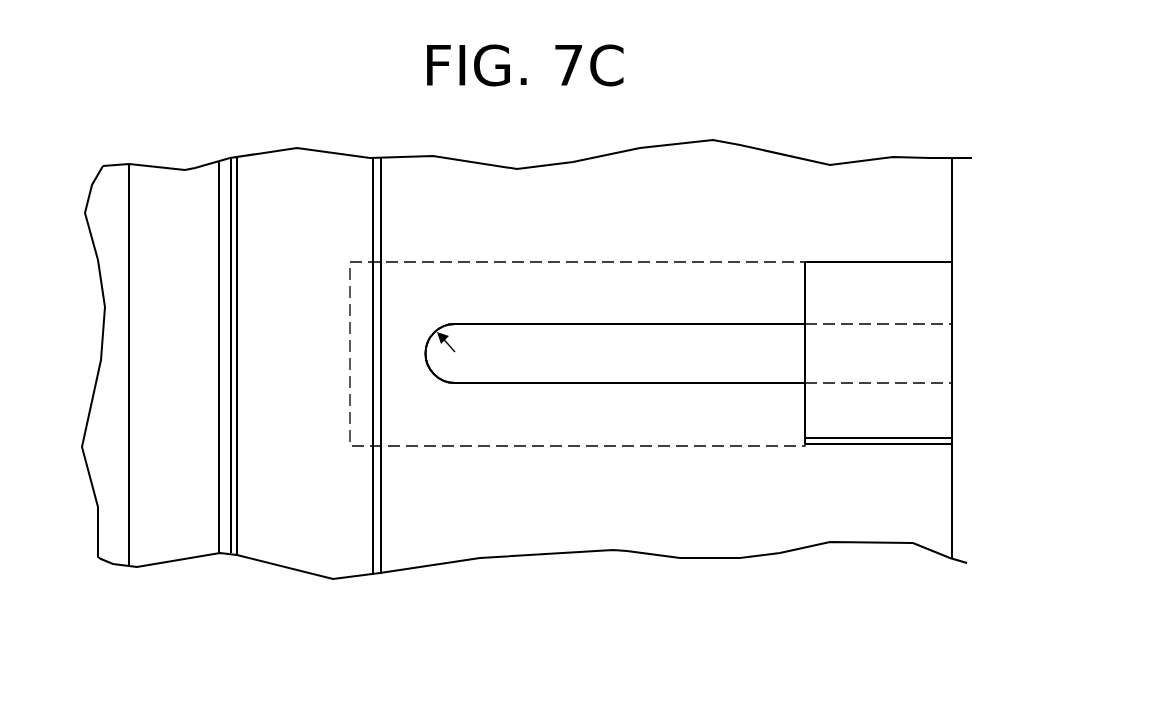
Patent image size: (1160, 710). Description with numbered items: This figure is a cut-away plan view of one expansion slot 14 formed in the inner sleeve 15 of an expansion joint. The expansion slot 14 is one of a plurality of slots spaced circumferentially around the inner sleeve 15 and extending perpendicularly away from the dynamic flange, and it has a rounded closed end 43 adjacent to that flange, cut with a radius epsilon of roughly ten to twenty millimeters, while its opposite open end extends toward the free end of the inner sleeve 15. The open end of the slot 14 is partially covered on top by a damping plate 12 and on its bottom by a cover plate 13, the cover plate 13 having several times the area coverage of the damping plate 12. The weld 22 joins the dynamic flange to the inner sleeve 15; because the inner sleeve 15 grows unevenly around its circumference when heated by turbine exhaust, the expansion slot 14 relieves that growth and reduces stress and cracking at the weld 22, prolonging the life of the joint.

The damping plate 12 is at (878, 418).
The cover plate 13 is at (685, 262).
The expansion slot 14 is at (547, 335).
The inner sleeve 15 is at (617, 523).
The weld 22 is at (381, 505).
The closed end 43 is at (437, 378).